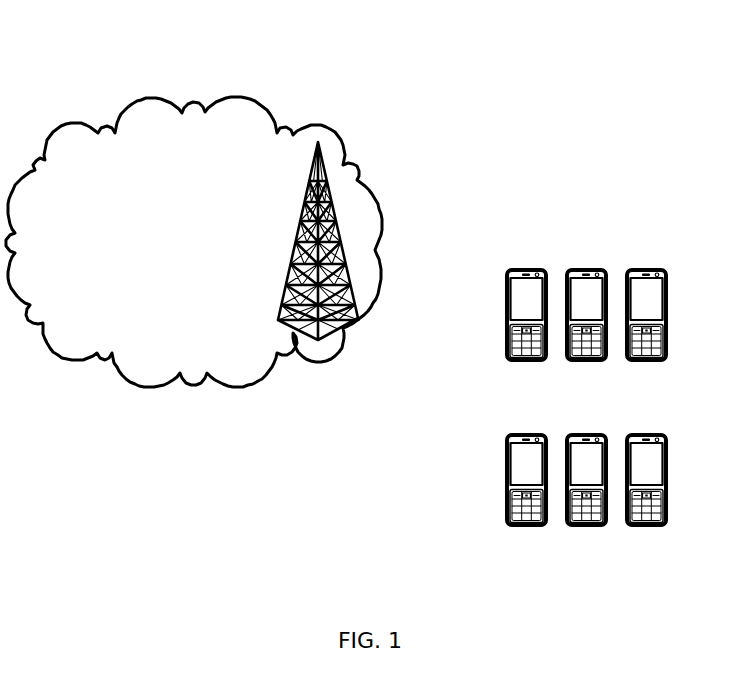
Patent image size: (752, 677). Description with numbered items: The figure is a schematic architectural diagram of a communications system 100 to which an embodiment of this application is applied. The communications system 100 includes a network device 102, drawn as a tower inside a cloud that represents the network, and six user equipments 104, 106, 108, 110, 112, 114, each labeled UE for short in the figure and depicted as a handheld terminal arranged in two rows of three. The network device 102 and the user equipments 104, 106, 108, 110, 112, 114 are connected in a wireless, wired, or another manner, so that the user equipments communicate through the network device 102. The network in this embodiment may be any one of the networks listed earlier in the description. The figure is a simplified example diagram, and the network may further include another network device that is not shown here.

The communications system 100 is at (238, 65).
The network device 102 is at (240, 307).
The user equipment 104 is at (523, 267).
The user equipment 106 is at (583, 267).
The user equipment 108 is at (647, 267).
The user equipment 110 is at (525, 528).
The user equipment 112 is at (585, 528).
The user equipment 114 is at (647, 528).